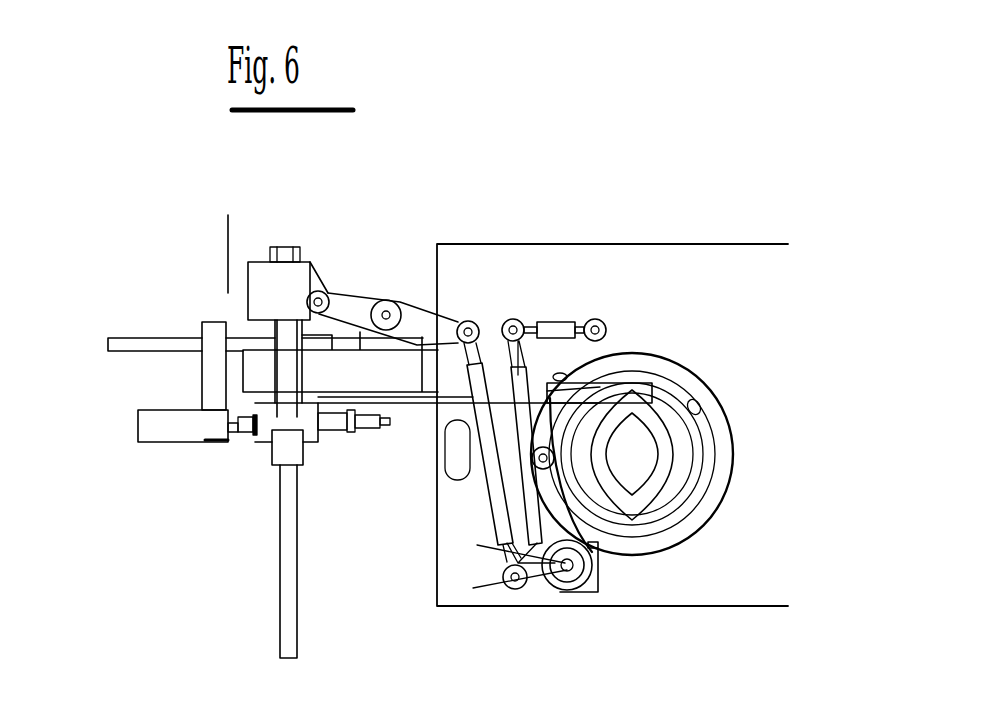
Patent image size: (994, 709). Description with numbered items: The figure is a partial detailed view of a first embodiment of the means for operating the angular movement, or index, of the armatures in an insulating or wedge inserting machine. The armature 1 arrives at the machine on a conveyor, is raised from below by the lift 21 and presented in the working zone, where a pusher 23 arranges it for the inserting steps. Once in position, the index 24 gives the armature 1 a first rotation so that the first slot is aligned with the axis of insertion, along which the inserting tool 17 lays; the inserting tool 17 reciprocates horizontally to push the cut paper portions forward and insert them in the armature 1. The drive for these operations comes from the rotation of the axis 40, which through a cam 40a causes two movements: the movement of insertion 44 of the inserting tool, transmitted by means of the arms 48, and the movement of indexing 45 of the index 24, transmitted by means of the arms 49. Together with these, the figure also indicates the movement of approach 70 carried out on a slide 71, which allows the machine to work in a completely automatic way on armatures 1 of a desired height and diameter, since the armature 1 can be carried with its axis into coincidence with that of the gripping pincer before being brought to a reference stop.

The armature 1 is at (272, 428).
The inserting tool 17 is at (423, 405).
The lift 21 is at (282, 457).
The pusher 23 is at (158, 428).
The index 24 is at (287, 340).
The axis 40 is at (638, 448).
The cam 40a is at (700, 370).
The movement of insertion 44 is at (553, 303).
The movement of indexing 45 is at (228, 247).
The arms 48 is at (548, 328).
The arms 49 is at (481, 345).
The movement of approach 70 is at (177, 383).
The slide 71 is at (182, 347).